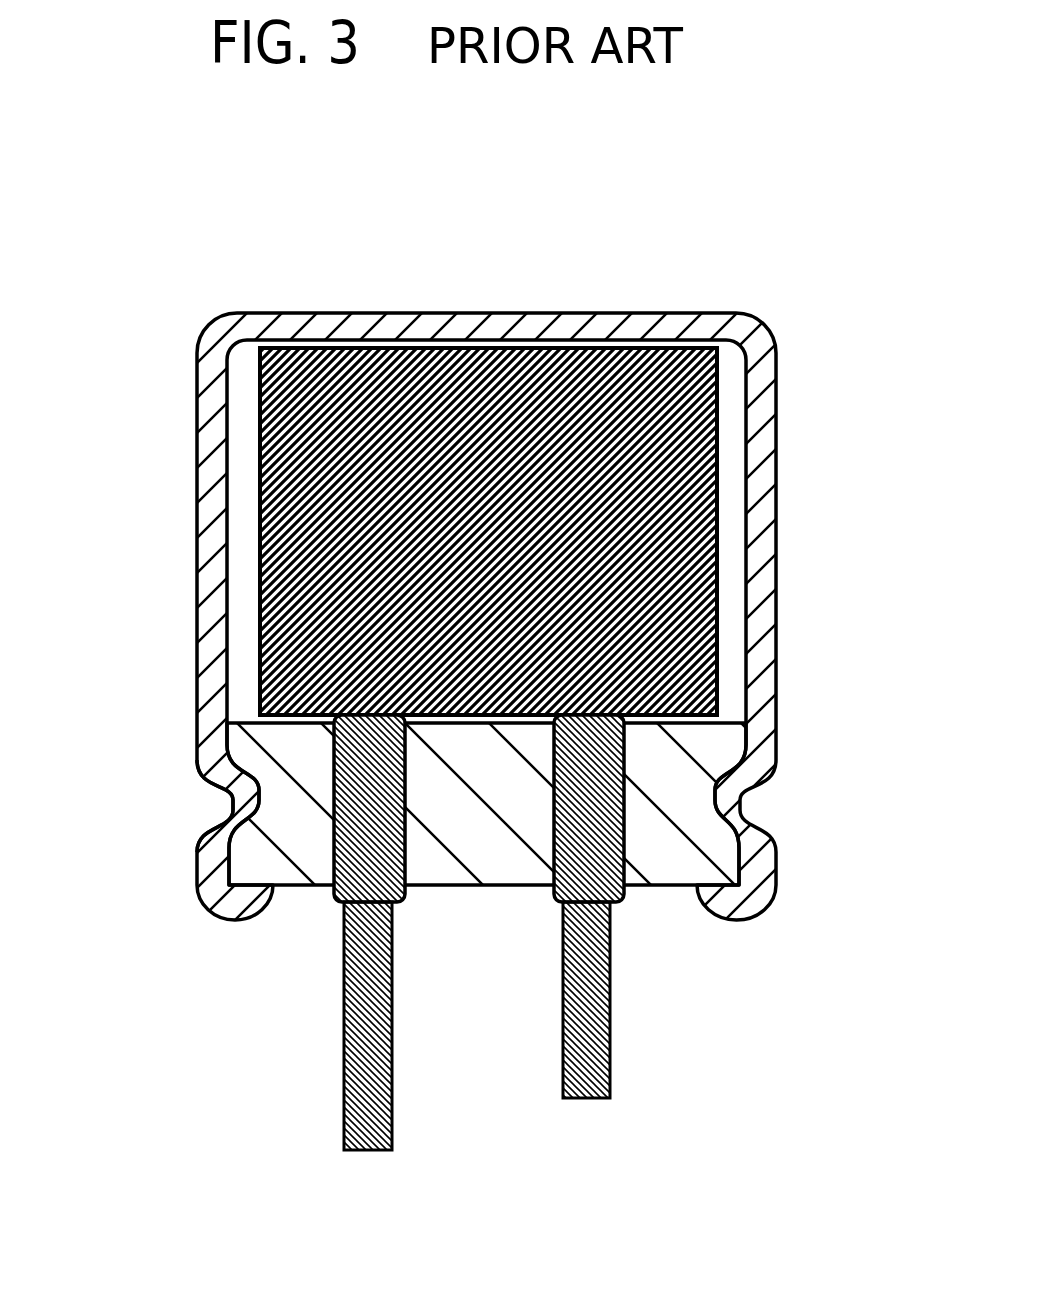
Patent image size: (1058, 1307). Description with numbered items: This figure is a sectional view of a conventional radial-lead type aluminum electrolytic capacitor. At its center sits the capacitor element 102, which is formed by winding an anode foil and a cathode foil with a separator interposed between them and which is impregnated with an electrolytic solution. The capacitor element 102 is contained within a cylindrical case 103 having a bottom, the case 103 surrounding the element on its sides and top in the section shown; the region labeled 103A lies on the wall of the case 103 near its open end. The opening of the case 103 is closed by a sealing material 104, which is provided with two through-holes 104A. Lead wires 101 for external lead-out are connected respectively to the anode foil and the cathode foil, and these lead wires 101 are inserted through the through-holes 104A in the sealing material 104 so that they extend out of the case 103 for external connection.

The lead wires 101 is at (340, 897).
The capacitor element 102 is at (683, 510).
The cylindrical case 103 is at (758, 405).
The curled groove of case 103A is at (217, 805).
The sealing material 104 is at (708, 740).
The through-holes 104A is at (333, 768).